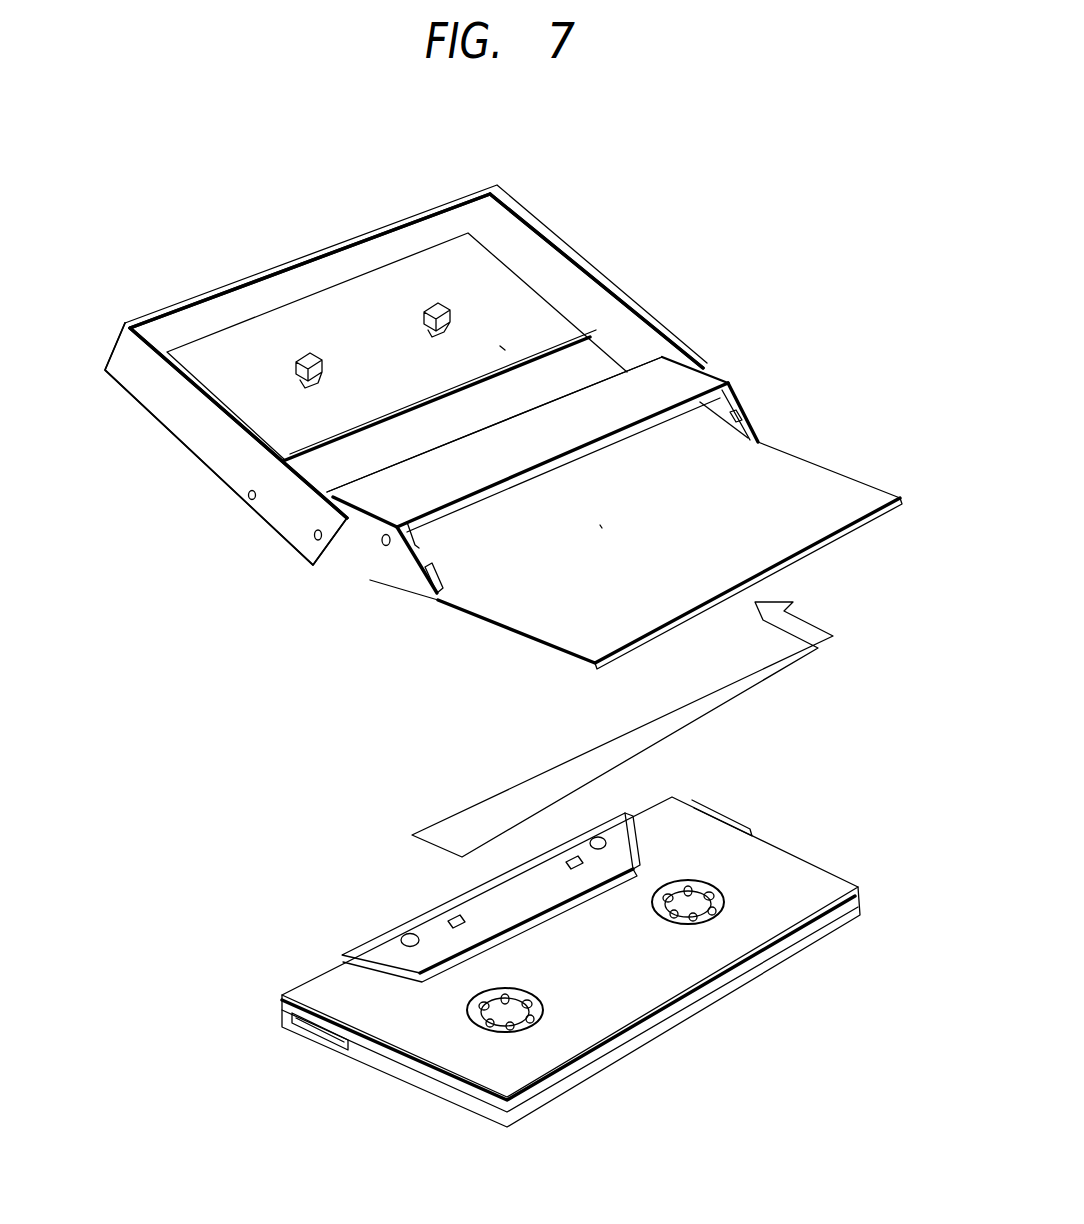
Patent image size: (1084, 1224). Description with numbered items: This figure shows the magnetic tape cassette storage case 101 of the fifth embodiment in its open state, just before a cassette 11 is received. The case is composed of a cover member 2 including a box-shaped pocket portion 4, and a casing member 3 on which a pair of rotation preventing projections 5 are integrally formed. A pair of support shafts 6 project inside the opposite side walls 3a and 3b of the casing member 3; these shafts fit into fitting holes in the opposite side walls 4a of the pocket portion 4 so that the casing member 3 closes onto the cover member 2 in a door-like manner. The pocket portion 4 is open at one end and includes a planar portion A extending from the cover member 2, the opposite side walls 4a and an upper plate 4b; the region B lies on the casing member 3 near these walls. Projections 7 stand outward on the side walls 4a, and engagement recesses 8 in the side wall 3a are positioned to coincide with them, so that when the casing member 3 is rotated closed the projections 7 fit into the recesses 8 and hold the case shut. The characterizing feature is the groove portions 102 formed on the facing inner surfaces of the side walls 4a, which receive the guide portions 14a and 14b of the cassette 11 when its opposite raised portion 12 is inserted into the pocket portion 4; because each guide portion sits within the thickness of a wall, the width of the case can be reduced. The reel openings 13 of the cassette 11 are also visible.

The cassette storage case 101 is at (673, 251).
The casing member 3 is at (577, 241).
The side wall 3a is at (647, 318).
The side wall 3b is at (263, 275).
The pocket portion 4 is at (698, 378).
The side wall 4a is at (742, 393).
The upper plate 4b is at (475, 477).
The rotation preventing projections 5 is at (436, 318).
The support shafts 6 is at (316, 541).
The projections 7 is at (386, 550).
The engagement recesses 8 is at (248, 500).
The groove portions 102 is at (428, 552).
The cover member 2 is at (789, 450).
The planar portion A is at (598, 531).
The tray floor B is at (503, 348).
The cassette 11 is at (767, 836).
The raised portion 12 is at (433, 922).
The reel hubs 13 is at (660, 918).
The guide portion 14a is at (710, 803).
The guide portion 14b is at (313, 1035).